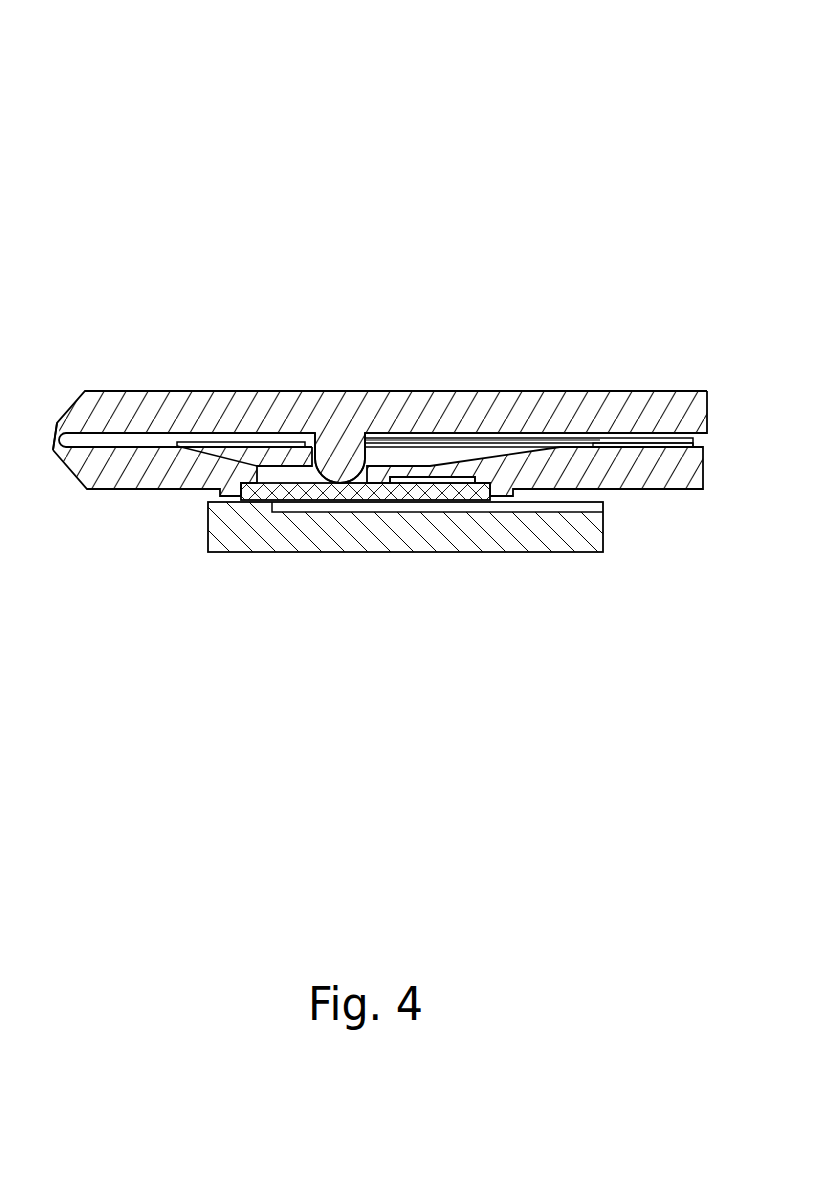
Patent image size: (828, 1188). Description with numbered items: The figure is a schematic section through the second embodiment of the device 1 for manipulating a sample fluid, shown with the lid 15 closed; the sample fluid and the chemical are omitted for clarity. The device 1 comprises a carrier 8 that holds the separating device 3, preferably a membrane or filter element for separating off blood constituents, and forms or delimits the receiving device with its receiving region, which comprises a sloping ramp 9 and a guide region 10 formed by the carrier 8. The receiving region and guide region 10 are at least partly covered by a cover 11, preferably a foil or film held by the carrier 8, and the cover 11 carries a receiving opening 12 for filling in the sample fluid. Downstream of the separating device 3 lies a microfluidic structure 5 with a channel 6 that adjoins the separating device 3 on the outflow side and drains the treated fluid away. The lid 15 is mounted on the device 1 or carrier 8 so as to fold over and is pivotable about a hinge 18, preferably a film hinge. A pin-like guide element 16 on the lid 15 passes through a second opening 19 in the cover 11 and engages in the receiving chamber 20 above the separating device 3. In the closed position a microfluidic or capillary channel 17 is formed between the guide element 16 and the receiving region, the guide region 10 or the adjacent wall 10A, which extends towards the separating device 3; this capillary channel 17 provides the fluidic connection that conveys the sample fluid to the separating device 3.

The device 1 is at (373, 390).
The separating device 3 is at (287, 492).
The microfluidic structure 5 is at (527, 552).
The channel 6 is at (597, 503).
The carrier 8 is at (143, 473).
The sloping ramp 9 is at (540, 447).
The guide region 10 is at (443, 466).
The wall 10A is at (378, 480).
The cover 11 is at (655, 432).
The receiving opening 12 is at (565, 447).
The lid 15 is at (120, 403).
The guide element 16 is at (333, 458).
The capillary channel 17 is at (362, 480).
The hinge 18 is at (53, 450).
The opening 19 is at (379, 468).
The receiving chamber 20 is at (237, 450).